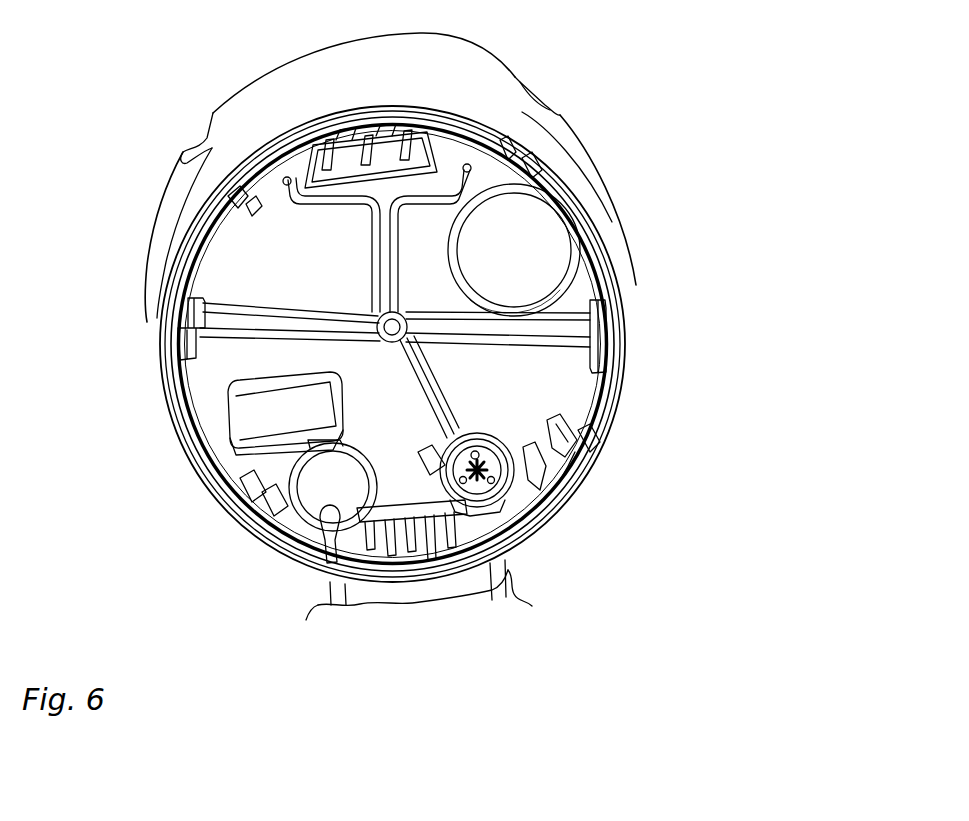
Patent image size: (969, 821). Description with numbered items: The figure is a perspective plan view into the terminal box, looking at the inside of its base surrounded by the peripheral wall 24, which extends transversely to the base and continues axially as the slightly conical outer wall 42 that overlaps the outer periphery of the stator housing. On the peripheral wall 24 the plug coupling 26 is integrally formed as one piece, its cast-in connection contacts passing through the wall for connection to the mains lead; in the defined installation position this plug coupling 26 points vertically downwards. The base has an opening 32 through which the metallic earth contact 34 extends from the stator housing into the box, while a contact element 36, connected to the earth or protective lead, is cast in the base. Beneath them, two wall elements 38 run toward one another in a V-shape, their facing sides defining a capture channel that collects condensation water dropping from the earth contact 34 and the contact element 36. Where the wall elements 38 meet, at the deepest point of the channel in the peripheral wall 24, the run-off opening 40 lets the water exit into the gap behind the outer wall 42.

The peripheral wall 24 is at (223, 472).
The plug coupling 26 is at (539, 597).
The opening 32 is at (482, 460).
The earth contact 34 is at (578, 490).
The contact element 36 is at (603, 320).
The wall elements 38 is at (600, 452).
The run-off opening 40 is at (500, 507).
The outer wall 42 is at (482, 84).